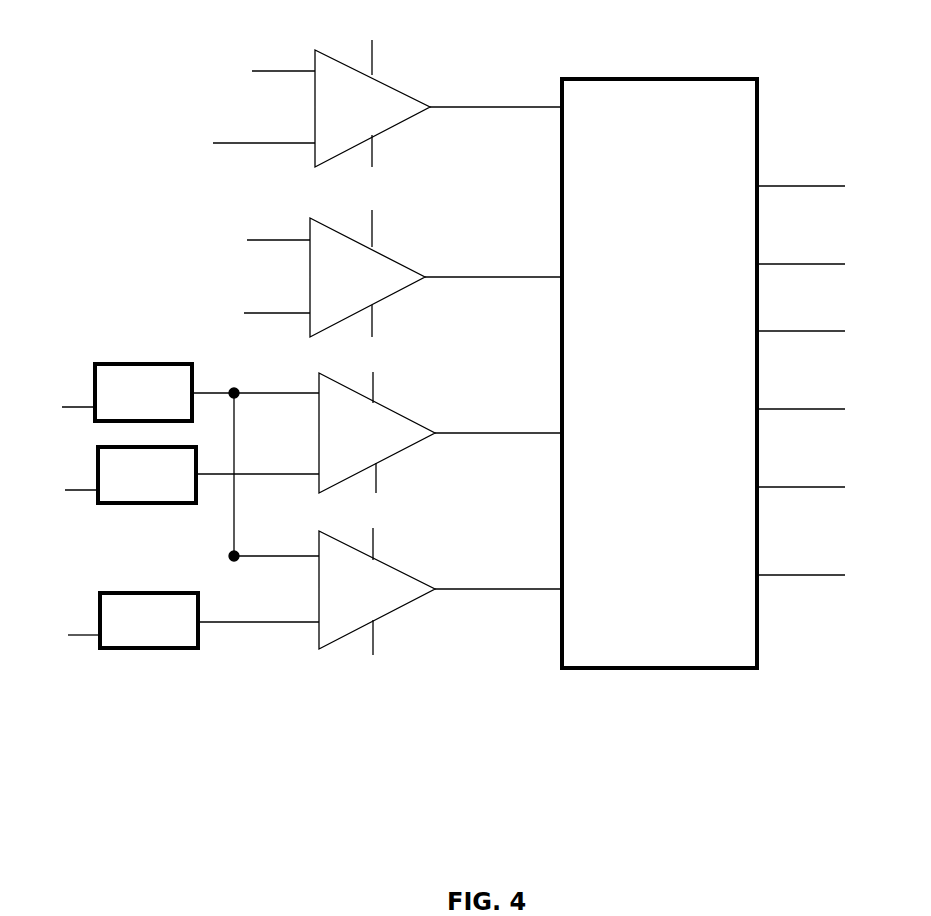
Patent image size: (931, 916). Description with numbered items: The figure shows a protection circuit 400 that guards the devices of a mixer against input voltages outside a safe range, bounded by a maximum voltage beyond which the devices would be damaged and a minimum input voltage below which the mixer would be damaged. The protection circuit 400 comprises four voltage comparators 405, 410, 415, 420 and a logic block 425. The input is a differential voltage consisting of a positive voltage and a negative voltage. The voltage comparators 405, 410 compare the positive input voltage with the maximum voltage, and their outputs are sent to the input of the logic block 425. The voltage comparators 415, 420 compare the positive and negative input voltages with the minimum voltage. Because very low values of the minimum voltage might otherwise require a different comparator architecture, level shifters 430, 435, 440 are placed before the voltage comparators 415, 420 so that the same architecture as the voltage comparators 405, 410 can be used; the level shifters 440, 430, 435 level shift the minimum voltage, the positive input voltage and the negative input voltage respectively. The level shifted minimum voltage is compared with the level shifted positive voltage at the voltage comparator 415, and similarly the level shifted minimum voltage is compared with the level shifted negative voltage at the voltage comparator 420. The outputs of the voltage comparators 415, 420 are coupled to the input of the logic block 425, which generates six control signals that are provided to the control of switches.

The protection circuit 400 is at (150, 754).
The voltage comparator 405 is at (326, 49).
The voltage comparator 410 is at (319, 217).
The voltage comparator 415 is at (330, 372).
The voltage comparator 420 is at (330, 530).
The logic block 425 is at (683, 78).
The level shifter 430 is at (166, 505).
The level shifter 435 is at (167, 592).
The level shifter 440 is at (165, 363).